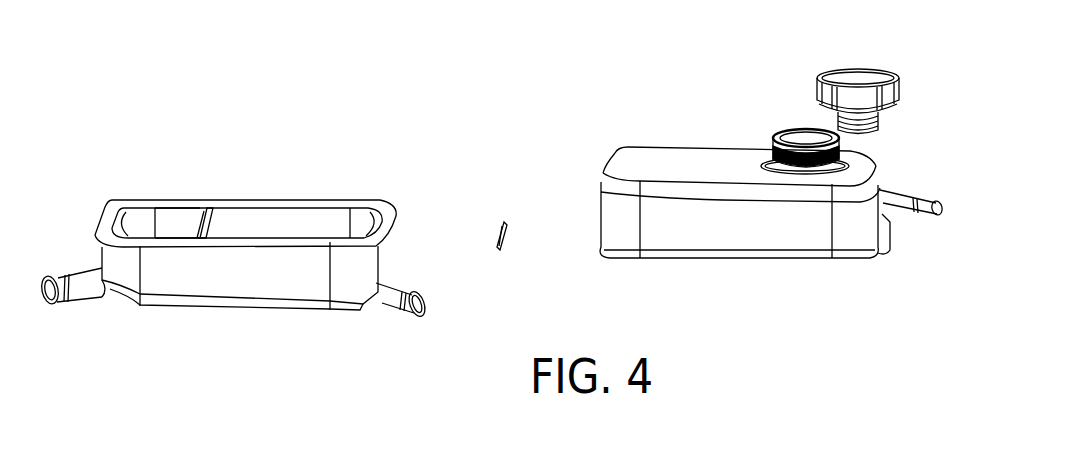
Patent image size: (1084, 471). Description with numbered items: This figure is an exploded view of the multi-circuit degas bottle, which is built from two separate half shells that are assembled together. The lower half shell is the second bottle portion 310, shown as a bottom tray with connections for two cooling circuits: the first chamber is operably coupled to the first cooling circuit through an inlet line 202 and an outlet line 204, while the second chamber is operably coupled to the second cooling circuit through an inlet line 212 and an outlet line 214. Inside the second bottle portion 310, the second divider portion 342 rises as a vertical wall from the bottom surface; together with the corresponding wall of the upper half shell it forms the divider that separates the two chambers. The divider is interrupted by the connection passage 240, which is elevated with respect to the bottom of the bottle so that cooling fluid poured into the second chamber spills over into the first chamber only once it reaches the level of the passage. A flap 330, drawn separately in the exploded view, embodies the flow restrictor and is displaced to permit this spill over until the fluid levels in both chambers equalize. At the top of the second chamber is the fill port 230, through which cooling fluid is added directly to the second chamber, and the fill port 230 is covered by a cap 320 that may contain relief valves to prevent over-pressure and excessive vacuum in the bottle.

The inlet line 202 is at (583, 175).
The outlet line 204 is at (75, 292).
The inlet line 212 is at (902, 197).
The outlet line 214 is at (383, 297).
The fill port 230 is at (790, 128).
The connection passage 240 is at (197, 222).
The second bottle portion 310 is at (267, 292).
The cap 320 is at (854, 80).
The flap 330 is at (498, 236).
The second divider portion 342 is at (207, 208).